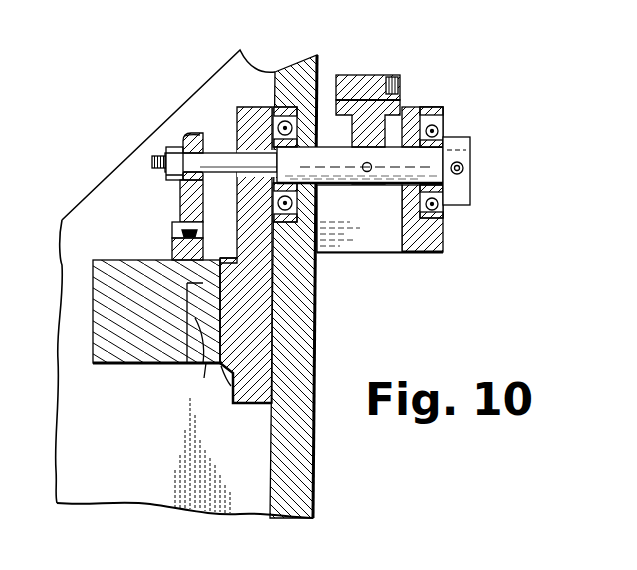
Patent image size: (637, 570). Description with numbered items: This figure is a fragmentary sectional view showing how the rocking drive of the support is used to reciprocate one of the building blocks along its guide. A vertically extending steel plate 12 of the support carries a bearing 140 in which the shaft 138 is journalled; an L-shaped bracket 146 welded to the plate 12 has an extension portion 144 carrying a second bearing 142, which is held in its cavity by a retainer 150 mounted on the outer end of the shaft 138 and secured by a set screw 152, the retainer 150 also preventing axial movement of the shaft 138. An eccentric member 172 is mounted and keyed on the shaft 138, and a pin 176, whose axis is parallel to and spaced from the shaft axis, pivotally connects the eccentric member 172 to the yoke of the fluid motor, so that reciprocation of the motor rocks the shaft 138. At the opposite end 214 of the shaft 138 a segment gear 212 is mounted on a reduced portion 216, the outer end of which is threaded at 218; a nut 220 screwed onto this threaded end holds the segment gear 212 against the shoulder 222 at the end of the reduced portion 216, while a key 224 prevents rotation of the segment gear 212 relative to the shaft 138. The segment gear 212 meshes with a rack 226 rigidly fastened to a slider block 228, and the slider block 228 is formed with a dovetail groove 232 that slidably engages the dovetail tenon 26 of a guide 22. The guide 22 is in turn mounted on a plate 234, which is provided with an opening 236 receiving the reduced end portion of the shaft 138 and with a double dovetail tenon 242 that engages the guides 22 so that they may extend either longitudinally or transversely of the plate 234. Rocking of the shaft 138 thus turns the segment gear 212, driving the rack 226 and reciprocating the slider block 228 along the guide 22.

The vertically extending plate 12 is at (313, 435).
The guide 22 is at (210, 370).
The dovetail tenon 26 is at (197, 307).
The shaft 138 is at (360, 165).
The bearing 140 is at (292, 70).
The bearing 142 is at (447, 113).
The extension portion 144 is at (423, 230).
The L-shaped bracket 146 is at (390, 232).
The retainer 150 is at (468, 140).
The set screw 152 is at (463, 168).
The eccentric member 172 is at (365, 138).
The pin 176 is at (373, 97).
The segment gear 212 is at (187, 208).
The end of the shaft 214 is at (223, 160).
The reduced portion 216 is at (185, 143).
The threaded outer end 218 is at (155, 158).
The nut 220 is at (170, 147).
The spacer 222 is at (188, 152).
The key 224 is at (193, 174).
The rack 226 is at (182, 246).
The slider block 228 is at (127, 363).
The dovetail groove 232 is at (198, 363).
The plate 234 is at (258, 353).
The opening 236 is at (283, 153).
The double dovetail tenon 242 is at (225, 290).